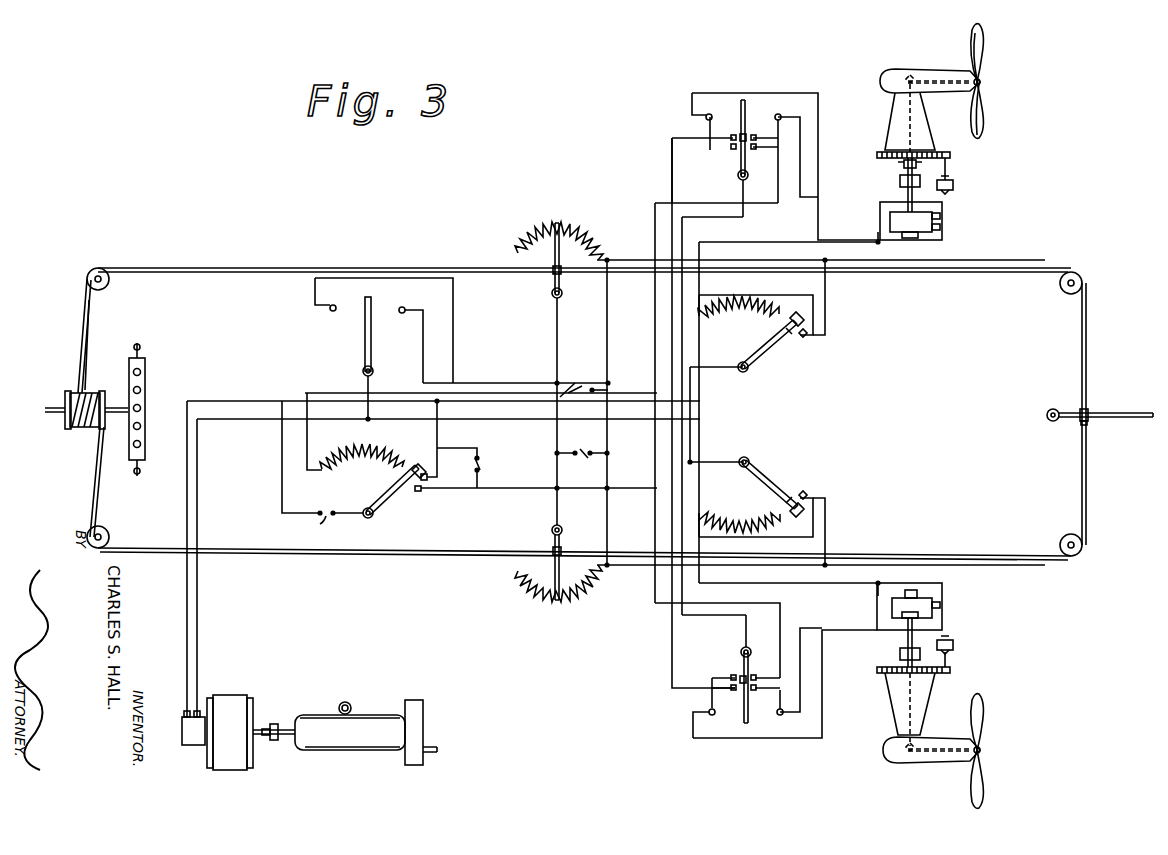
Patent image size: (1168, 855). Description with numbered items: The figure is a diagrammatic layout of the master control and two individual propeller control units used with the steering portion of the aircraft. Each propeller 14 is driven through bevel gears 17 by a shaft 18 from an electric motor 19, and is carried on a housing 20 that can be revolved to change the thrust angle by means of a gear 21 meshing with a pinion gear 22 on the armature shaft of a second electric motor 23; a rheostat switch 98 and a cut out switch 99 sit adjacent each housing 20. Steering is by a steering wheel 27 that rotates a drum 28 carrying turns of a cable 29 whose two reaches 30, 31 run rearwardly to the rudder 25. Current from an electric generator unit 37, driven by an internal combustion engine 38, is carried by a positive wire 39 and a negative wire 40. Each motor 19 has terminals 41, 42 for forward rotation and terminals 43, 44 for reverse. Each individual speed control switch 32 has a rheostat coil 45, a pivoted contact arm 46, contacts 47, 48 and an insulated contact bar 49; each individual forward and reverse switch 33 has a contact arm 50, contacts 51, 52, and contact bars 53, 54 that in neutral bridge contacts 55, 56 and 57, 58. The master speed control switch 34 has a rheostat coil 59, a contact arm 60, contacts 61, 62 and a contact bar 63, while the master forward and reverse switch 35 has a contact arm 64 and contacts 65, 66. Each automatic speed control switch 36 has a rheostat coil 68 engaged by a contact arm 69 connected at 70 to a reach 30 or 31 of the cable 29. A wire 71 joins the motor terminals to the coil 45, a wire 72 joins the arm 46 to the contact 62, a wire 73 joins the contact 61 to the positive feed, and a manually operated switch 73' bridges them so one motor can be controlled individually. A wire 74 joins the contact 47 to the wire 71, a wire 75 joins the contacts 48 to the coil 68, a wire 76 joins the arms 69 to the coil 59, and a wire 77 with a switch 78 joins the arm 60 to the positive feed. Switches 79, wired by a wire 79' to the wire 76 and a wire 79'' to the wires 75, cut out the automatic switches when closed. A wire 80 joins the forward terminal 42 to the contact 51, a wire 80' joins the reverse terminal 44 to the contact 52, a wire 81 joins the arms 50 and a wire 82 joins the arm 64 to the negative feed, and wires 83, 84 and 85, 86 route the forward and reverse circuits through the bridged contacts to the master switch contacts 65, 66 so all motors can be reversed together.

The propeller 14 is at (994, 416).
The bevel gears 17 is at (930, 414).
The shaft 18 is at (906, 415).
The electric motor 19 is at (941, 426).
The housing 20 is at (897, 414).
The gear 21 is at (899, 408).
The pinion shaft 22 is at (962, 411).
The electric motor 23 is at (962, 411).
The rudder 25 is at (1100, 425).
The steering wheel 27 is at (150, 407).
The drum 28 is at (78, 420).
The cable 29 is at (71, 390).
The reach 30 is at (580, 319).
The reach 31 is at (586, 428).
The individual speed control switch 32 is at (778, 412).
The individual forward and reverse switch 33 is at (767, 416).
The master speed control switch 34 is at (404, 466).
The master forward and reverse switch 35 is at (369, 330).
The automatic speed control switch 36 is at (554, 413).
The electric generator unit 37 is at (238, 722).
The internal combustion engine 38 is at (366, 726).
The positive wire 39 is at (168, 559).
The negative wire 40 is at (211, 568).
The terminal 41 is at (890, 414).
The forward terminal 42 is at (902, 417).
The terminal 43 is at (941, 404).
The reverse terminal 44 is at (953, 404).
The rheostat coil 45 is at (739, 414).
The contact arm 46 is at (767, 414).
The contact 47 is at (798, 411).
The contact 48 is at (812, 414).
The contact bar 49 is at (785, 415).
The contact arm 50 is at (748, 408).
The contact 51 is at (707, 414).
The contact 52 is at (789, 411).
The contact bar 53 is at (746, 412).
The contact bar 54 is at (739, 411).
The contact 55 is at (720, 412).
The contact 56 is at (766, 412).
The contact 57 is at (765, 413).
The contact 58 is at (729, 408).
The rheostat coil 59 is at (362, 448).
The contact arm 60 is at (387, 491).
The contact 61 is at (442, 467).
The contact 62 is at (431, 495).
The contact bar 63 is at (420, 456).
The contact arm 64 is at (383, 334).
The contact 65 is at (326, 306).
The contact 66 is at (409, 345).
The rheostat coil 68 is at (554, 411).
The contact arm 69 is at (555, 413).
The connection 70 is at (541, 414).
The wire 71 is at (789, 411).
The wire 72 is at (539, 477).
The wire 73 is at (452, 439).
The manually operated switch 73' is at (492, 469).
The wire 74 is at (756, 414).
The wire 75 is at (836, 412).
The wire 76 is at (419, 431).
The wire 77 is at (307, 458).
The switch 78 is at (314, 528).
The switch 79 is at (584, 412).
The wire 79' is at (582, 415).
The wire 79'' is at (612, 412).
The wire 80 is at (786, 415).
The wire 80' is at (800, 414).
The wire 81 is at (821, 412).
The wire 82 is at (349, 395).
The wire 83 is at (717, 411).
The wire 84 is at (640, 403).
The wire 85 is at (737, 413).
The wire 86 is at (650, 376).
The rheostat switch 98 is at (892, 168).
The cut out switch 99 is at (894, 412).